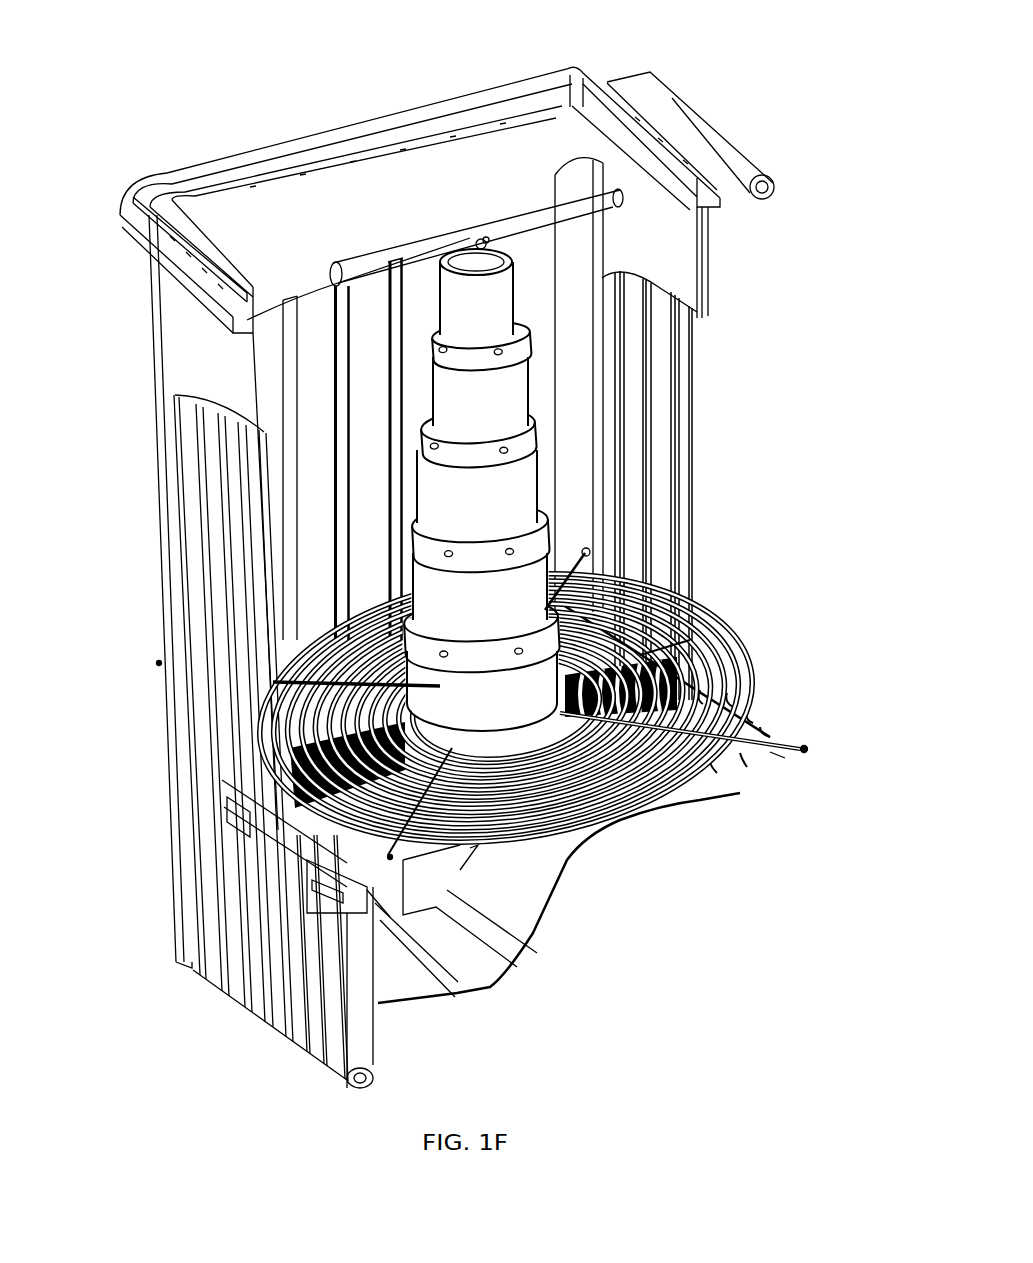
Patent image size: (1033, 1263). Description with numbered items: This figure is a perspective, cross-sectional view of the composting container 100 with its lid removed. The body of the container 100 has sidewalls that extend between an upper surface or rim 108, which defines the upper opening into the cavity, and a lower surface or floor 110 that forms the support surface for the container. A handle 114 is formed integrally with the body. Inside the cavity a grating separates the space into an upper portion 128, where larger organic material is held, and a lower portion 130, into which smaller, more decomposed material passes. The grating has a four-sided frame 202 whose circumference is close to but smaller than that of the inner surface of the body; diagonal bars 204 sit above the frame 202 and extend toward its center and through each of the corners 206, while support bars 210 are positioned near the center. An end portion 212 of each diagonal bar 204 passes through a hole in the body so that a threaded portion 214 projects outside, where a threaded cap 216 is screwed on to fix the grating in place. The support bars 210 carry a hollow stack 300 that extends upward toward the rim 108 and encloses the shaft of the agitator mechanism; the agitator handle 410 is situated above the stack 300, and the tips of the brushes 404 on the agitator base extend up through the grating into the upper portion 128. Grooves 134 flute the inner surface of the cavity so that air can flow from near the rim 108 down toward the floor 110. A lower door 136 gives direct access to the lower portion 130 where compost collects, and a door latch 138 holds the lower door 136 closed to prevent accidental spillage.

The composting container 100 is at (88, 66).
The upper surface or rim 108 is at (186, 170).
The lower surface or floor 110 is at (488, 993).
The handle 114 is at (727, 141).
The upper portion of the cavity 128 is at (573, 430).
The lower portion of the cavity 130 is at (483, 890).
The grooves 134 is at (340, 318).
The lower door 136 is at (283, 998).
The door latch 138 is at (240, 823).
The frame 202 is at (700, 695).
The diagonal bars 204 is at (757, 735).
The corners of the frame 206 is at (773, 757).
The support bars 210 is at (522, 743).
The end portion of diagonal bar 212 is at (770, 747).
The threaded portion of end portion 214 is at (805, 752).
The threaded cap 216 is at (158, 665).
The stack 300 is at (517, 588).
The brushes 404 is at (665, 650).
The handle of agitator 410 is at (593, 201).